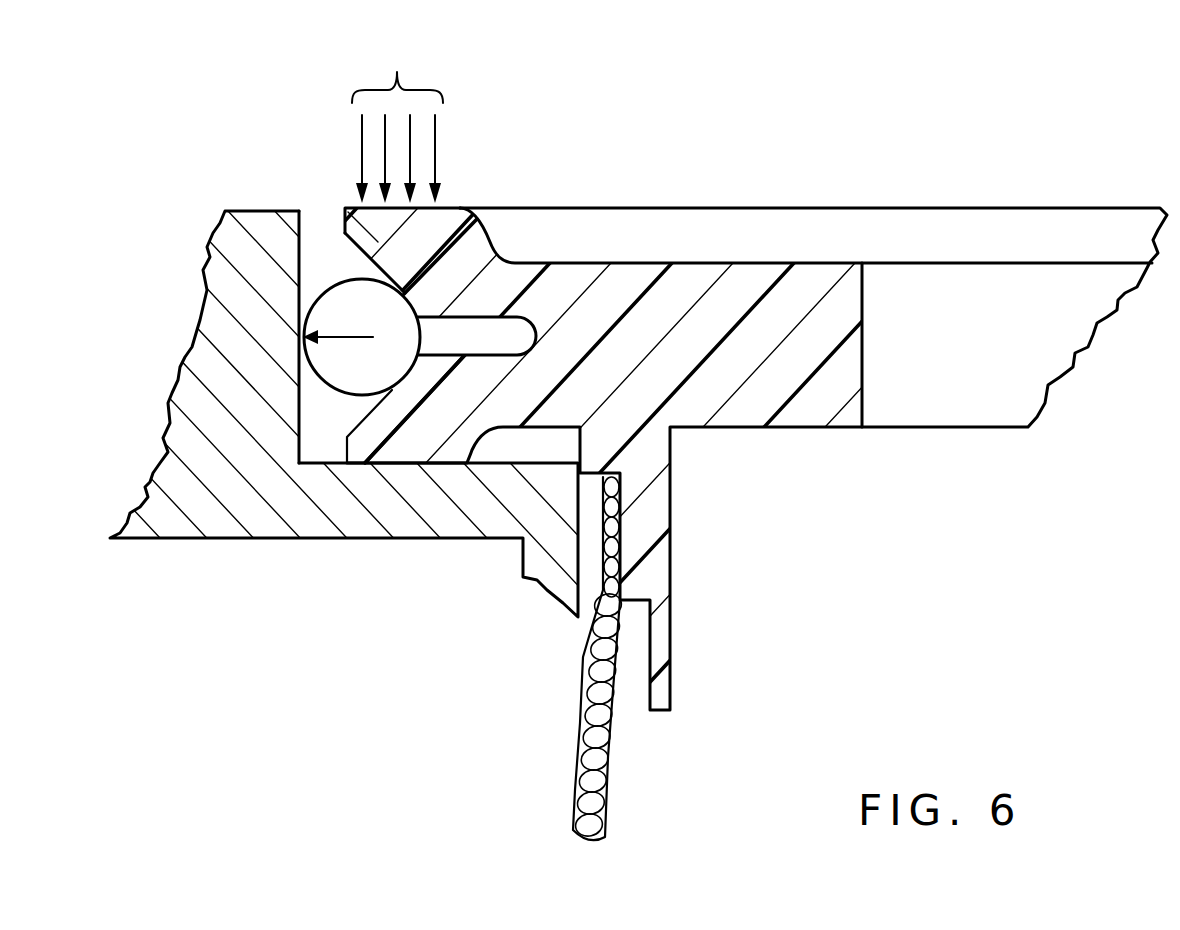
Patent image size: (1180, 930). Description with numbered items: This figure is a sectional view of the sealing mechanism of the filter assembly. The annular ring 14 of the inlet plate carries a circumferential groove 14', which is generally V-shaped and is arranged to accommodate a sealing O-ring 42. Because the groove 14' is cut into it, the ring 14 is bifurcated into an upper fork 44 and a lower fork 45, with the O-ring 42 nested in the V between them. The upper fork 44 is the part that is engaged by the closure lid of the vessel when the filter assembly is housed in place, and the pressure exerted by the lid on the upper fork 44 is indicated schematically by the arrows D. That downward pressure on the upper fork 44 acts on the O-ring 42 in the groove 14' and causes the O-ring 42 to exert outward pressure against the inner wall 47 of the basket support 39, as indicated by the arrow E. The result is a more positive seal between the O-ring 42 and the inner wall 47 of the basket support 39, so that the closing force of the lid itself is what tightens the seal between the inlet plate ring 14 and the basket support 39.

The annular ring 14 is at (590, 401).
The circumferential groove 14' is at (306, 197).
The basket support 39 is at (230, 540).
The sealing O-ring 42 is at (343, 372).
The upper fork 44 is at (347, 233).
The lower fork 45 is at (400, 443).
The inner wall 47 is at (300, 397).
The arrows indicating lid pressure D is at (397, 116).
The arrow indicating outward pressure E is at (343, 337).